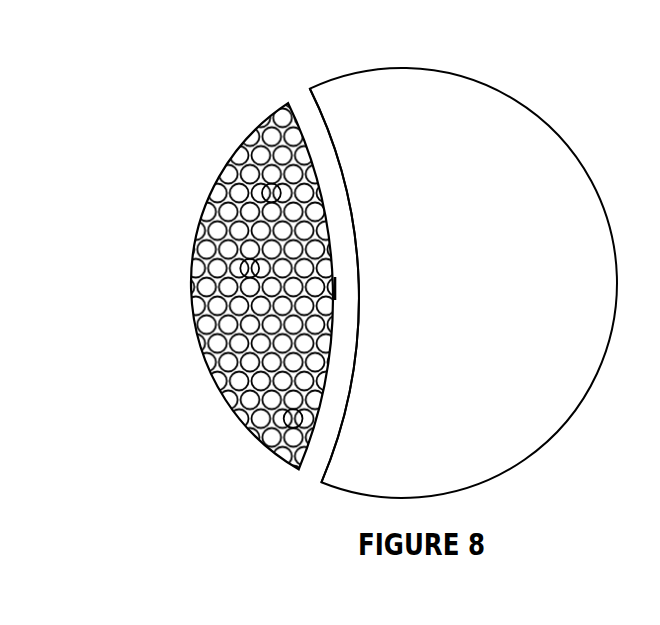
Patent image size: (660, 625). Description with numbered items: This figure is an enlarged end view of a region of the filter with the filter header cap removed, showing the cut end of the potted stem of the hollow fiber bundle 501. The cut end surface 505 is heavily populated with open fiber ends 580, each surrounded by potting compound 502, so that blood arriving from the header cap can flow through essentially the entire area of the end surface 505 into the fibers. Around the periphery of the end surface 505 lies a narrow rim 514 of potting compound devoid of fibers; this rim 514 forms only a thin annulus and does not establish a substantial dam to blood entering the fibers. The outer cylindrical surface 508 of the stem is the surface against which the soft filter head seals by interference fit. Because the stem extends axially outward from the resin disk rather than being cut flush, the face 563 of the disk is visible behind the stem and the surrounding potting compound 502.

The hollow fiber bundle 501 is at (249, 262).
The potting compound 502 is at (288, 118).
The cut end surface 505 is at (297, 413).
The outer cylindrical surface of the stem 508 is at (343, 225).
The rim of potting compound 514 is at (285, 290).
The face of the disk 563 is at (493, 232).
The open fiber ends 580 is at (265, 195).